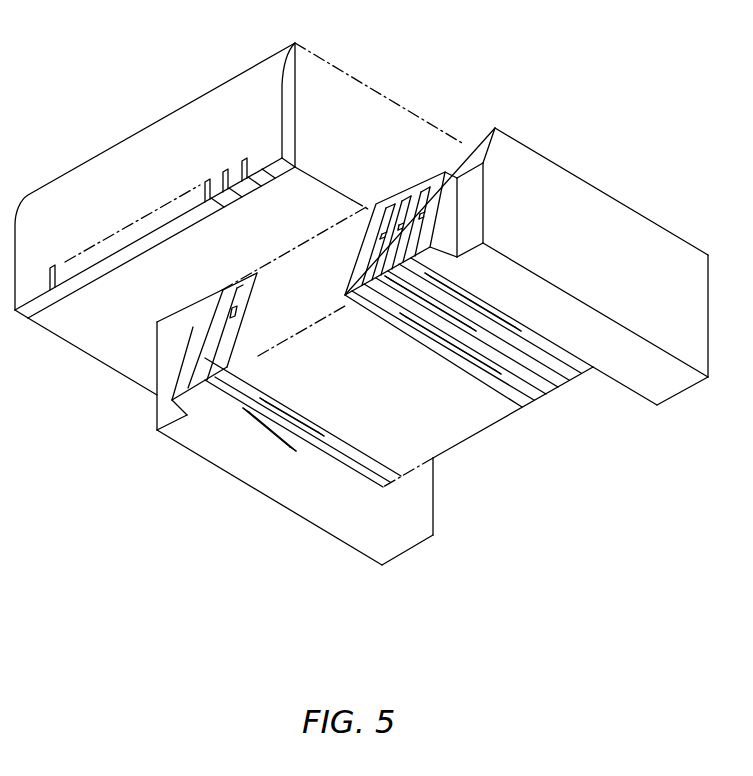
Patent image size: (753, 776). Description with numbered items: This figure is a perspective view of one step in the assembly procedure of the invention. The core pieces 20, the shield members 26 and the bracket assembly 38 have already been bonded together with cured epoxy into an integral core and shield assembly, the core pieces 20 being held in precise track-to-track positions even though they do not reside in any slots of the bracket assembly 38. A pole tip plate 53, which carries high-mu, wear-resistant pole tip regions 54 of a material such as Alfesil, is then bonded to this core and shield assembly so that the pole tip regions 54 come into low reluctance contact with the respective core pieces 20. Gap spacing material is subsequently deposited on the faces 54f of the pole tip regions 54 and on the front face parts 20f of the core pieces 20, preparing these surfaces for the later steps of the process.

The pole tip plate 53 is at (287, 127).
The pole tip regions 54 is at (205, 182).
The faces of the pole tips 54f is at (221, 210).
The bracket assembly 38 is at (637, 230).
The core pieces 20 is at (217, 350).
The front face parts of the core pieces 20f is at (217, 385).
The shield members 26 is at (222, 300).